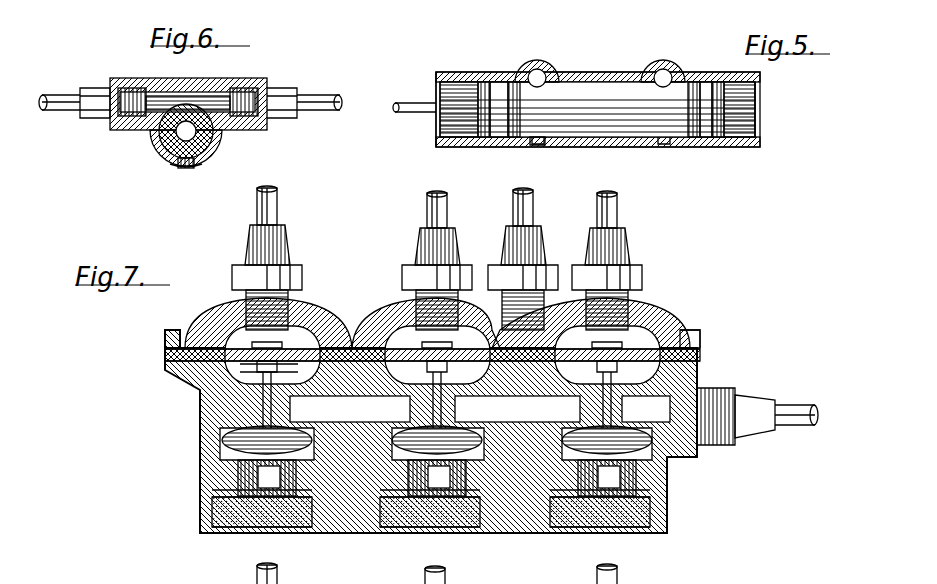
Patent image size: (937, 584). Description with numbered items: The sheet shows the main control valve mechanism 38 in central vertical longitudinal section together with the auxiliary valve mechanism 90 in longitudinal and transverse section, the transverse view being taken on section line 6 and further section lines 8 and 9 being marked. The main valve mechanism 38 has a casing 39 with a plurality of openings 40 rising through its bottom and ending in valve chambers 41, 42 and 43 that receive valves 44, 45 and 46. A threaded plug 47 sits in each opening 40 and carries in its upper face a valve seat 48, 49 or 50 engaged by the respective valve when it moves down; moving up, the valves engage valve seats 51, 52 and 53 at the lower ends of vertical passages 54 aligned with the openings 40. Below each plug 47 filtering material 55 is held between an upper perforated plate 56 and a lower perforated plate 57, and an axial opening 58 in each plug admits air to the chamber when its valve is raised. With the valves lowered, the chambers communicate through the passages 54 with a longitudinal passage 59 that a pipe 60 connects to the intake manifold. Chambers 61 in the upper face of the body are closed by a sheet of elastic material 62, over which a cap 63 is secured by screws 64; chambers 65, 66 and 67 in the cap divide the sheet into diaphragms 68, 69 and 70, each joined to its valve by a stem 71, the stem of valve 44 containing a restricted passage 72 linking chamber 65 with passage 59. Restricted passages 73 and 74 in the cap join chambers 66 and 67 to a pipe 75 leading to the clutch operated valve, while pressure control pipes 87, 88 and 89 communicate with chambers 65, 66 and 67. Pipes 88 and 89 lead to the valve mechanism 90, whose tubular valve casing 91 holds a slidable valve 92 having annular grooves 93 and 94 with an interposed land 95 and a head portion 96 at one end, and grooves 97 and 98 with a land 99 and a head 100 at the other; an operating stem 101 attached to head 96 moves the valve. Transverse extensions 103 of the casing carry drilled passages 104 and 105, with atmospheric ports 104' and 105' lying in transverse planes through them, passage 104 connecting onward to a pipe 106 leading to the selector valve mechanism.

In FIG. 5, the section line 6 is at (548, 48).
In FIG. 7, the section line 8 is at (150, 455).
In FIG. 5, the section line 9 is at (430, 180).
In FIG. 7, the section line 9 is at (432, 553).
In FIG. 7, the main valve mechanism 38 is at (682, 312).
In FIG. 7, the casing 39 is at (668, 476).
In FIG. 7, the openings 40 is at (212, 512).
In FIG. 7, the valve chamber 41 is at (220, 440).
In FIG. 7, the valve chamber 42 is at (374, 440).
In FIG. 7, the valve chamber 43 is at (527, 410).
In FIG. 7, the valve 44 is at (236, 452).
In FIG. 7, the valve 45 is at (478, 490).
In FIG. 7, the valve 46 is at (646, 409).
In FIG. 7, the threaded plug 47 is at (232, 470).
In FIG. 7, the valve seat 48 is at (267, 478).
In FIG. 7, the valve seat 49 is at (438, 452).
In FIG. 7, the valve seat 50 is at (607, 453).
In FIG. 7, the valve seat 51 is at (212, 430).
In FIG. 7, the valve seat 52 is at (517, 409).
In FIG. 7, the valve seat 53 is at (557, 410).
In FIG. 7, the vertical passages 54 is at (250, 390).
In FIG. 7, the filtering material 55 is at (427, 541).
In FIG. 7, the upper perforated plate 56 is at (434, 547).
In FIG. 7, the lower perforated plate 57 is at (437, 552).
In FIG. 7, the axial opening 58 is at (230, 488).
In FIG. 7, the longitudinal passage 59 is at (339, 410).
In FIG. 7, the pipe 60 is at (770, 404).
In FIG. 7, the chambers 61 is at (208, 368).
In FIG. 7, the sheet of elastic material 62 is at (700, 355).
In FIG. 7, the cap 63 is at (215, 320).
In FIG. 7, the screws 64 is at (165, 334).
In FIG. 7, the chamber 65 is at (310, 338).
In FIG. 7, the chamber 66 is at (392, 330).
In FIG. 7, the chamber 67 is at (644, 340).
In FIG. 7, the diaphragm 68 is at (272, 355).
In FIG. 7, the diaphragm 69 is at (437, 355).
In FIG. 7, the diaphragm 70 is at (607, 355).
In FIG. 7, the stems 71 is at (278, 370).
In FIG. 7, the restricted passage 72 is at (350, 409).
In FIG. 7, the restricted passage 73 is at (480, 312).
In FIG. 7, the restricted passage 74 is at (560, 312).
In FIG. 7, the pipe 75 is at (533, 208).
In FIG. 7, the pressure control pipe 87 is at (257, 204).
In FIG. 6, the pressure control pipe 88 is at (322, 112).
In FIG. 7, the pressure control pipe 88 is at (427, 208).
In FIG. 7, the pressure control pipe 89 is at (617, 208).
In FIG. 6, the valve mechanism 90 is at (240, 80).
In FIG. 5, the valve mechanism 90 is at (598, 72).
In FIG. 6, the tubular valve casing 91 is at (168, 160).
In FIG. 5, the tubular valve casing 91 is at (712, 72).
In FIG. 6, the valve 92 is at (216, 148).
In FIG. 5, the valve 92 is at (597, 109).
In FIG. 5, the annular groove 93 is at (514, 140).
In FIG. 5, the annular groove 94 is at (478, 140).
In FIG. 5, the land 95 is at (496, 72).
In FIG. 5, the head portion 96 is at (450, 72).
In FIG. 5, the annular groove 97 is at (694, 140).
In FIG. 5, the annular groove 98 is at (718, 147).
In FIG. 5, the land 99 is at (716, 147).
In FIG. 5, the head 100 is at (760, 108).
In FIG. 5, the operating stem 101 is at (410, 100).
In FIG. 6, the transverse extensions 103 is at (134, 80).
In FIG. 5, the transverse extensions 103 is at (528, 62).
In FIG. 6, the drilled passage 104 is at (188, 83).
In FIG. 5, the drilled passage 104 is at (553, 92).
In FIG. 6, the atmospheric port 104' is at (178, 182).
In FIG. 5, the atmospheric port 104' is at (559, 152).
In FIG. 5, the drilled passage 105 is at (661, 59).
In FIG. 5, the atmospheric port 105' is at (653, 153).
In FIG. 6, the pipe 106 is at (72, 96).